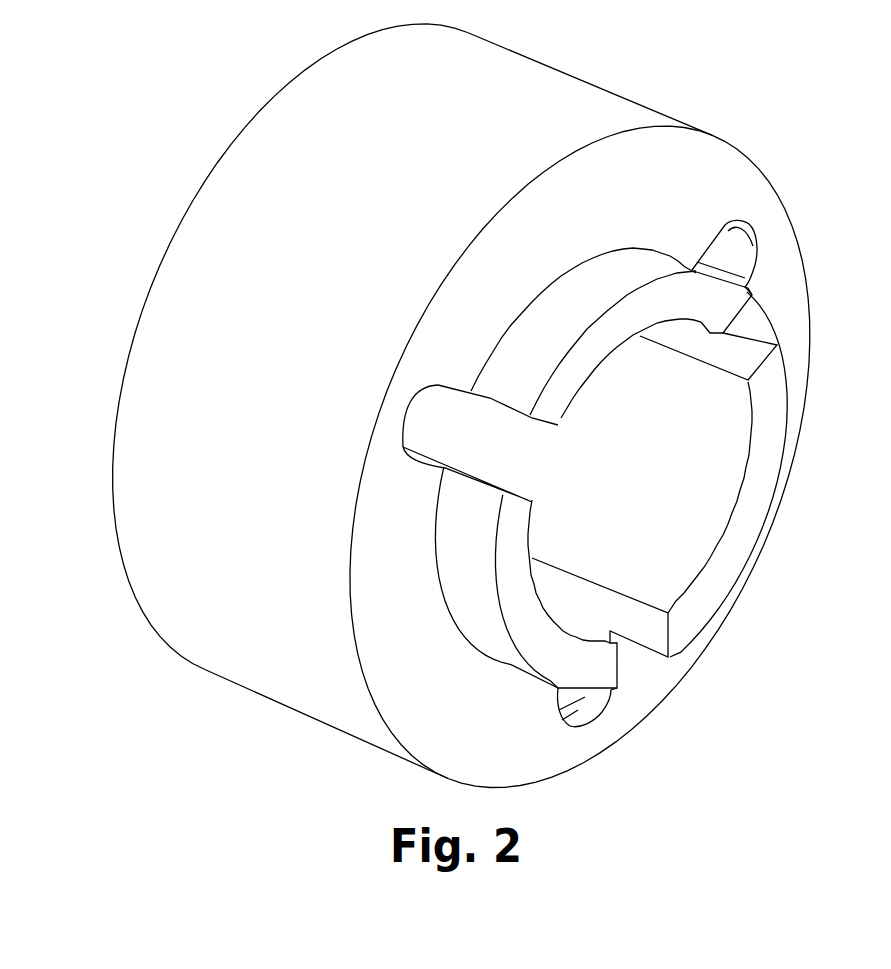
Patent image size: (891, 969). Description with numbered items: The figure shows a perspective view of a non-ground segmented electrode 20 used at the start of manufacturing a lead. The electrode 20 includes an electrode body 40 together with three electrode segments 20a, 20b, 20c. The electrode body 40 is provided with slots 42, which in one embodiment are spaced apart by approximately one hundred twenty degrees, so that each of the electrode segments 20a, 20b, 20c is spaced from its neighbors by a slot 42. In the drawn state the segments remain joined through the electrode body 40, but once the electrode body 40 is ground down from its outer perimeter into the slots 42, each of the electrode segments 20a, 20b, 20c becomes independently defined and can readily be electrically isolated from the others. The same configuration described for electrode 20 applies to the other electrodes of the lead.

The non-ground electrode 20 is at (445, 406).
The electrode body 40 is at (690, 158).
The slots 42 is at (752, 249).
The electrode segment 20a is at (598, 362).
The electrode segment 20b is at (512, 542).
The electrode segment 20c is at (745, 528).